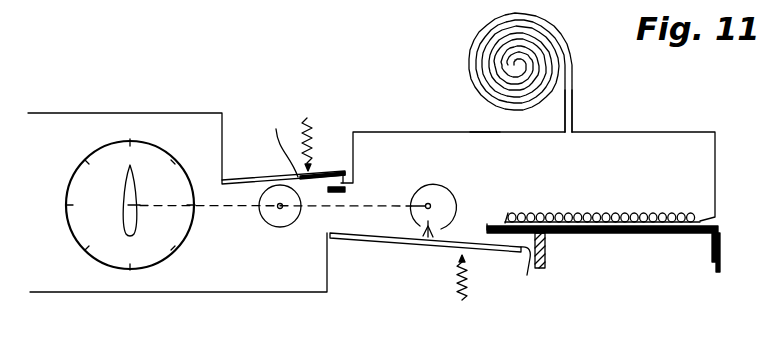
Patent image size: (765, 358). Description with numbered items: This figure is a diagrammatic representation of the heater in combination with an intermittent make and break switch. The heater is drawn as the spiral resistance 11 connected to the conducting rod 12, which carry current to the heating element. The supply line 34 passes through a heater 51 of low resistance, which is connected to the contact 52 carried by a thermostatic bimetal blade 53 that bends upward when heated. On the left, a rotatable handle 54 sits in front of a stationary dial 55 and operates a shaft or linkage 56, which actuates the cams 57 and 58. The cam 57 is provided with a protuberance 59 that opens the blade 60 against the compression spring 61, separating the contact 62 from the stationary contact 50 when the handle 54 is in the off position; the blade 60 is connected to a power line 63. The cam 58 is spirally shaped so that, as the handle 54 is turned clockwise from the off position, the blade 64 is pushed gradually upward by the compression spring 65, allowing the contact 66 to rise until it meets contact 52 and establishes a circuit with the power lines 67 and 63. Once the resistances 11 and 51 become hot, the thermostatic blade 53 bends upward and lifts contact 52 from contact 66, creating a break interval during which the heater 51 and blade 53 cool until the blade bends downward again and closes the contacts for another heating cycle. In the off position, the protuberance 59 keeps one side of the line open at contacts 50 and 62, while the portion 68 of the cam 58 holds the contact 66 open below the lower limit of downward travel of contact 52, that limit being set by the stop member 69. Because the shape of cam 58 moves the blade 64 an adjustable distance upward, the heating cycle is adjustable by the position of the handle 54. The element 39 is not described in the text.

The spiral resistance 11 is at (565, 113).
The conducting rod 12 is at (574, 85).
The line 34 is at (632, 130).
The housing top wall 39 is at (474, 131).
The stationary contact 50 is at (342, 192).
The heater 51 is at (615, 213).
The contact 52 is at (487, 230).
The thermostatic bimetal blade 53 is at (627, 236).
The rotatable handle 54 is at (138, 186).
The stationary dial 55 is at (75, 180).
The shaft or linkage 56 is at (235, 209).
The cam 57 is at (281, 217).
The cam 58 is at (437, 193).
The protuberance 59 is at (278, 142).
The blade 60 is at (260, 178).
The compression spring 61 is at (311, 134).
The contact 62 is at (343, 170).
The power line 63 is at (88, 113).
The blade 64 is at (410, 243).
The compression spring 65 is at (465, 283).
The contact 66 is at (525, 272).
The power line 67 is at (97, 295).
The portion of cam 68 is at (427, 236).
The stop member 69 is at (547, 249).